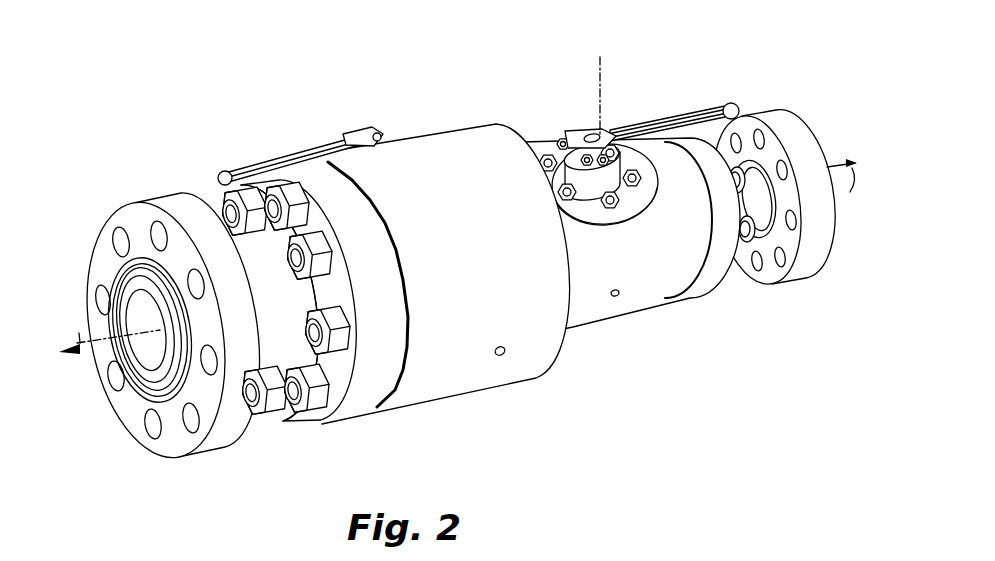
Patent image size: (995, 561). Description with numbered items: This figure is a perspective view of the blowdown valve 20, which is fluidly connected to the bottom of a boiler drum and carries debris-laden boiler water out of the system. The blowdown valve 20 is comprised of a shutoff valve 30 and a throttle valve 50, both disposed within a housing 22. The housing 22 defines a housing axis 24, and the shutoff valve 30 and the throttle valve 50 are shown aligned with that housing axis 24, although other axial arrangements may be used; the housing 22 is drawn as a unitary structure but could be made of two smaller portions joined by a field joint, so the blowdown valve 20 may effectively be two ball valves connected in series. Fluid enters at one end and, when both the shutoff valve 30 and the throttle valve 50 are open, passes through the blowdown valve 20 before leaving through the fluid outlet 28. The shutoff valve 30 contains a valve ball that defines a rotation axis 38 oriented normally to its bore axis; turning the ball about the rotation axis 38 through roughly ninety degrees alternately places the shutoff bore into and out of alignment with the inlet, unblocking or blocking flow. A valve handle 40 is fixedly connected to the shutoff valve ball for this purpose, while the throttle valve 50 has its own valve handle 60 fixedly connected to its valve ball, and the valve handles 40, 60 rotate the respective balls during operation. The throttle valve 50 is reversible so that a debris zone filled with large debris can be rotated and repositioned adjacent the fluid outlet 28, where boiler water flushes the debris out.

The blowdown valve 20 is at (237, 74).
The housing 22 is at (505, 387).
The housing axis 24 is at (828, 167).
The fluid outlet 28 is at (157, 358).
The shutoff valve 30 is at (553, 146).
The rotation axis 38 is at (604, 72).
The valve handle 40 is at (677, 118).
The throttle valve 50 is at (357, 137).
The valve handle 60 is at (243, 168).